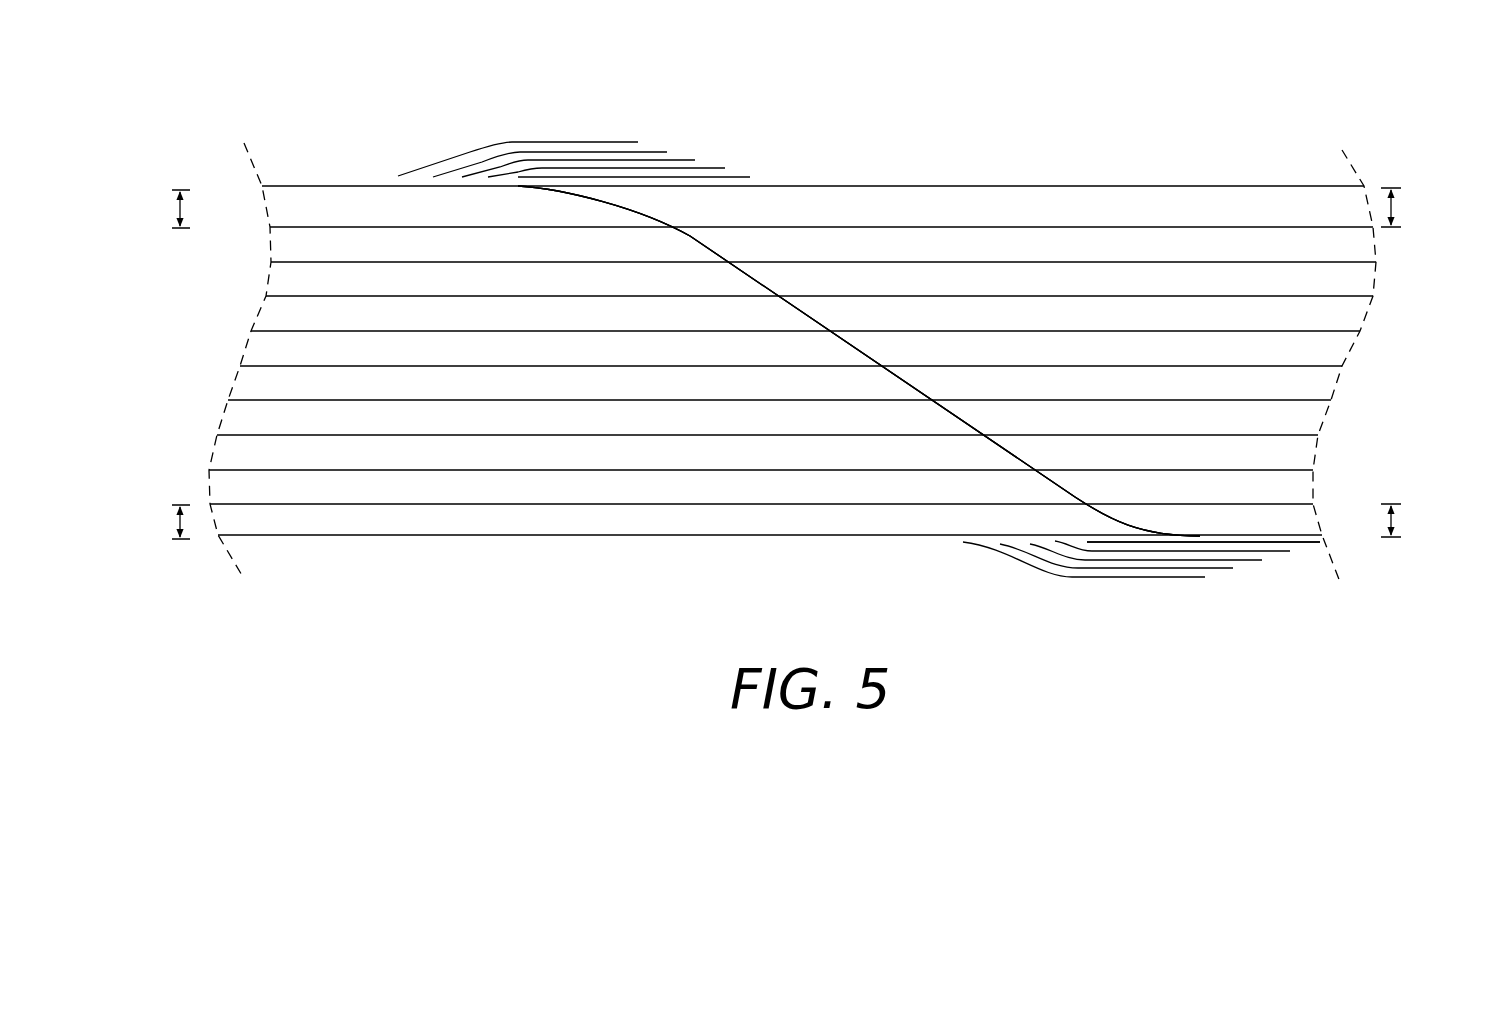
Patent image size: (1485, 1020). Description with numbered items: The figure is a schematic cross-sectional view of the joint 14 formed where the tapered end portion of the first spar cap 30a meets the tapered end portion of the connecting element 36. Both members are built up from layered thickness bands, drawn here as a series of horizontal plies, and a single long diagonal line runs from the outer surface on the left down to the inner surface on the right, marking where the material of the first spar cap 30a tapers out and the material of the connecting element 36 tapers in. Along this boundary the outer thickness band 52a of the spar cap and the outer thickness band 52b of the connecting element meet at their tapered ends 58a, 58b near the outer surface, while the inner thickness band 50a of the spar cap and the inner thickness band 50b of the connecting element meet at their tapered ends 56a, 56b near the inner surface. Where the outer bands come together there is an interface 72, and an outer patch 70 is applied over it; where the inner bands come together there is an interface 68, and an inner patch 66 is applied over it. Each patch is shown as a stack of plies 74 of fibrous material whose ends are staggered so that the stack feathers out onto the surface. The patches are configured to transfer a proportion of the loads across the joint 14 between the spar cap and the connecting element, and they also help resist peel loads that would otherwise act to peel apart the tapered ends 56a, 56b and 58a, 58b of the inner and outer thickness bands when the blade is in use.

The joint 14 is at (553, 87).
The first spar cap 30a is at (314, 164).
The connecting element 36 is at (1178, 169).
The inner thickness band 50a is at (150, 522).
The inner thickness band 50b is at (1419, 520).
The outer thickness band 52a is at (150, 209).
The outer thickness band 52b is at (1422, 206).
The tapered end 56a is at (1087, 522).
The tapered end 56b is at (1146, 511).
The tapered end 58a is at (587, 208).
The tapered end 58b is at (675, 208).
The inner patch 66 is at (1146, 601).
The interface 68 is at (1201, 523).
The outer patch 70 is at (656, 114).
The interface 72 is at (526, 201).
The plies 74 is at (678, 160).